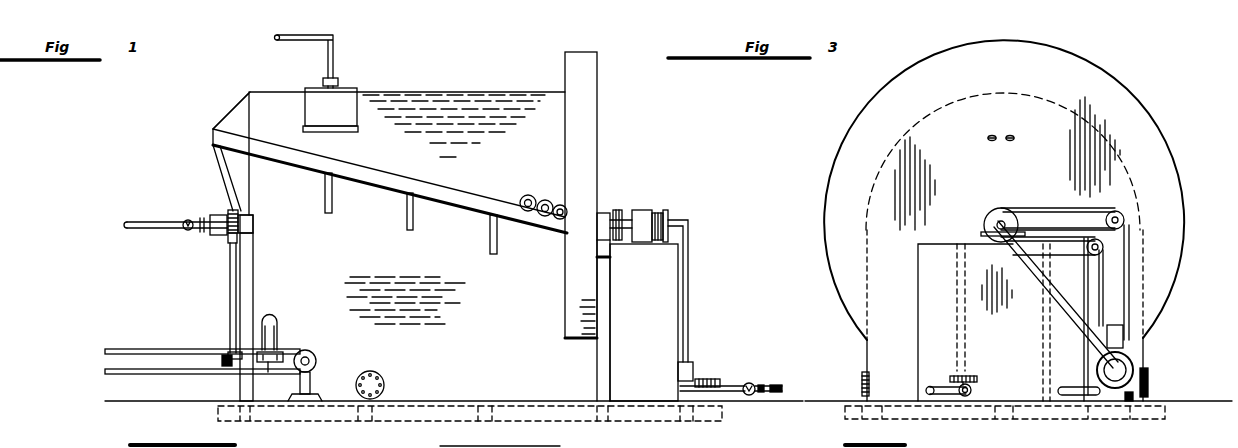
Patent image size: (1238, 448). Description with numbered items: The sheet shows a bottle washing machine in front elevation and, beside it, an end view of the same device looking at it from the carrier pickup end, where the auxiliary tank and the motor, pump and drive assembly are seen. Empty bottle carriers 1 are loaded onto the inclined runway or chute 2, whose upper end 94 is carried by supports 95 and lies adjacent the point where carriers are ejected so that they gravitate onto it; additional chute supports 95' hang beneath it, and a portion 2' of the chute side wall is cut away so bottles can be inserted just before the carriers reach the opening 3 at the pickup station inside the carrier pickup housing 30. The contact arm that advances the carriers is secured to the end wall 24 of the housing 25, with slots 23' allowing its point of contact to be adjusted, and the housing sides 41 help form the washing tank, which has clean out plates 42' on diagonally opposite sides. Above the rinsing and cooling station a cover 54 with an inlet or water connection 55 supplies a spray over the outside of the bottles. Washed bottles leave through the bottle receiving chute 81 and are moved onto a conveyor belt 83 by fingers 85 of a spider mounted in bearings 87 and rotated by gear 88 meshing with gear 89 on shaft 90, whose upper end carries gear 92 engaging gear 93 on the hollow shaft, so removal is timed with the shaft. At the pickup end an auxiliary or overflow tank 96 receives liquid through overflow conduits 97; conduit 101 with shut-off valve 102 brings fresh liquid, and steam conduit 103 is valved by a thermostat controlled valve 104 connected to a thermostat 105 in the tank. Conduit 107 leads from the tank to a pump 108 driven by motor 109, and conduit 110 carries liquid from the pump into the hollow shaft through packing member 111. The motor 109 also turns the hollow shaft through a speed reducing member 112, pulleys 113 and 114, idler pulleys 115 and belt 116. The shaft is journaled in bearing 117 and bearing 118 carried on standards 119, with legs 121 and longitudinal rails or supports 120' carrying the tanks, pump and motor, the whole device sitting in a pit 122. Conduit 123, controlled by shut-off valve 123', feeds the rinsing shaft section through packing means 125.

In FIG. 1, the bottle carriers 1 is at (531, 196).
In FIG. 1, the inclined runway or chute 2 is at (390, 181).
In FIG. 1, the cut-away portion of chute side wall 2' is at (523, 238).
In FIG. 1, the opening 3 is at (556, 223).
In FIG. 3, the end wall of housing 24 is at (974, 147).
In FIG. 3, the slots 23' is at (1001, 156).
In FIG. 1, the housing 25 is at (462, 96).
In FIG. 1, the carrier pickup housing 30 is at (588, 100).
In FIG. 3, the carrier pickup housing 30 is at (1085, 84).
In FIG. 1, the housing sides 41 is at (445, 343).
In FIG. 3, the housing sides 41 is at (867, 346).
In FIG. 1, the clean out plates 42' is at (389, 385).
In FIG. 3, the clean out plates 42' is at (1009, 382).
In FIG. 1, the cover 54 is at (350, 92).
In FIG. 1, the inlet or water connection 55 is at (337, 76).
In FIG. 1, the bottle receiving chute 81 is at (272, 338).
In FIG. 1, the conveyor belt 83 is at (195, 349).
In FIG. 1, the fingers 85 is at (270, 373).
In FIG. 1, the bearings 87 is at (300, 352).
In FIG. 1, the gear 88 is at (226, 366).
In FIG. 1, the gear 89 is at (235, 355).
In FIG. 1, the shaft 90 is at (231, 270).
In FIG. 1, the gear 92 is at (228, 240).
In FIG. 1, the gear 93 is at (233, 211).
In FIG. 1, the upper end of inclined runway 94 is at (213, 143).
In FIG. 1, the supports 95 is at (214, 178).
In FIG. 1, the additional chute supports 95' is at (411, 213).
In FIG. 1, the auxiliary or overflow tank 96 is at (680, 318).
In FIG. 3, the auxiliary or overflow tank 96 is at (927, 284).
In FIG. 1, the overflow conduits 97 is at (608, 259).
In FIG. 1, the conduit 101 is at (759, 397).
In FIG. 3, the conduit 101 is at (932, 396).
In FIG. 1, the shut-off valve 102 is at (752, 384).
In FIG. 1, the conduit 103 is at (778, 396).
In FIG. 3, the conduit 103 is at (966, 397).
In FIG. 1, the thermostat controlled valve 104 is at (716, 380).
In FIG. 3, the thermostat controlled valve 104 is at (978, 382).
In FIG. 1, the thermostat 105 is at (701, 378).
In FIG. 3, the conduit 107 is at (1087, 395).
In FIG. 1, the pump 108 is at (692, 362).
In FIG. 3, the pump 108 is at (1131, 400).
In FIG. 3, the motor 109 is at (1142, 369).
In FIG. 1, the conduit 110 is at (686, 286).
In FIG. 3, the conduit 110 is at (1077, 311).
In FIG. 1, the packing member 111 is at (660, 212).
In FIG. 3, the packing member 111 is at (1004, 208).
In FIG. 3, the speed reducing member 112 is at (1124, 343).
In FIG. 3, the pulley 113 is at (1130, 306).
In FIG. 1, the pulley 114 is at (640, 210).
In FIG. 3, the idler pulleys 115 is at (1121, 233).
In FIG. 1, the belt 116 is at (617, 210).
In FIG. 3, the belt 116 is at (1129, 258).
In FIG. 1, the bearing 117 is at (604, 211).
In FIG. 1, the bearing 118 is at (255, 233).
In FIG. 1, the standards 119 is at (252, 300).
In FIG. 3, the standards 119 is at (1043, 333).
In FIG. 1, the longitudinal rails or supports 120' is at (470, 427).
In FIG. 1, the legs or supports 121 is at (489, 413).
In FIG. 1, the pit 122 is at (705, 412).
In FIG. 1, the conduit 123 is at (128, 243).
In FIG. 1, the shut-off valve 123' is at (175, 242).
In FIG. 1, the packing means 125 is at (212, 216).